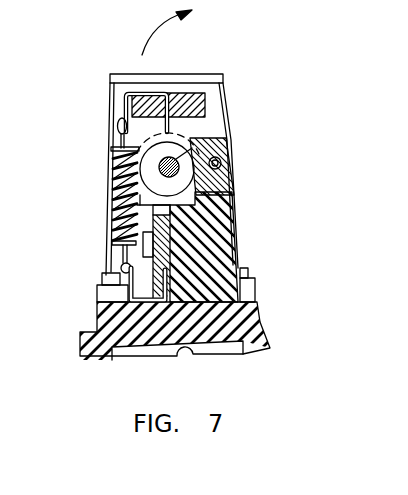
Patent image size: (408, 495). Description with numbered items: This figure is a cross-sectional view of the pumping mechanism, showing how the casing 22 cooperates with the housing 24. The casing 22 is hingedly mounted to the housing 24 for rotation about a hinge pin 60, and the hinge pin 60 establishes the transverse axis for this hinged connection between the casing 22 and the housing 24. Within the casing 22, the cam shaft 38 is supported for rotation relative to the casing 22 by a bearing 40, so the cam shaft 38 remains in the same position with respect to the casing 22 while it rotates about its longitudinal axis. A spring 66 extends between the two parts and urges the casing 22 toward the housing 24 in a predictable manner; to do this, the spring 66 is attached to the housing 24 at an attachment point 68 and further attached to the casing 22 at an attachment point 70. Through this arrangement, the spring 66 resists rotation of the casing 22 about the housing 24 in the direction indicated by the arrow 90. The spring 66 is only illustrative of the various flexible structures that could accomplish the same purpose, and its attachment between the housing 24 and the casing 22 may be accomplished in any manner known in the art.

The arrow 90 is at (156, 31).
The casing 22 is at (174, 218).
The attachment point 70 is at (94, 121).
The cam shaft 38 is at (228, 149).
The hinge pin 60 is at (265, 149).
The bearing 40 is at (227, 167).
The spring 66 is at (80, 196).
The housing 24 is at (198, 243).
The attachment point 68 is at (93, 273).